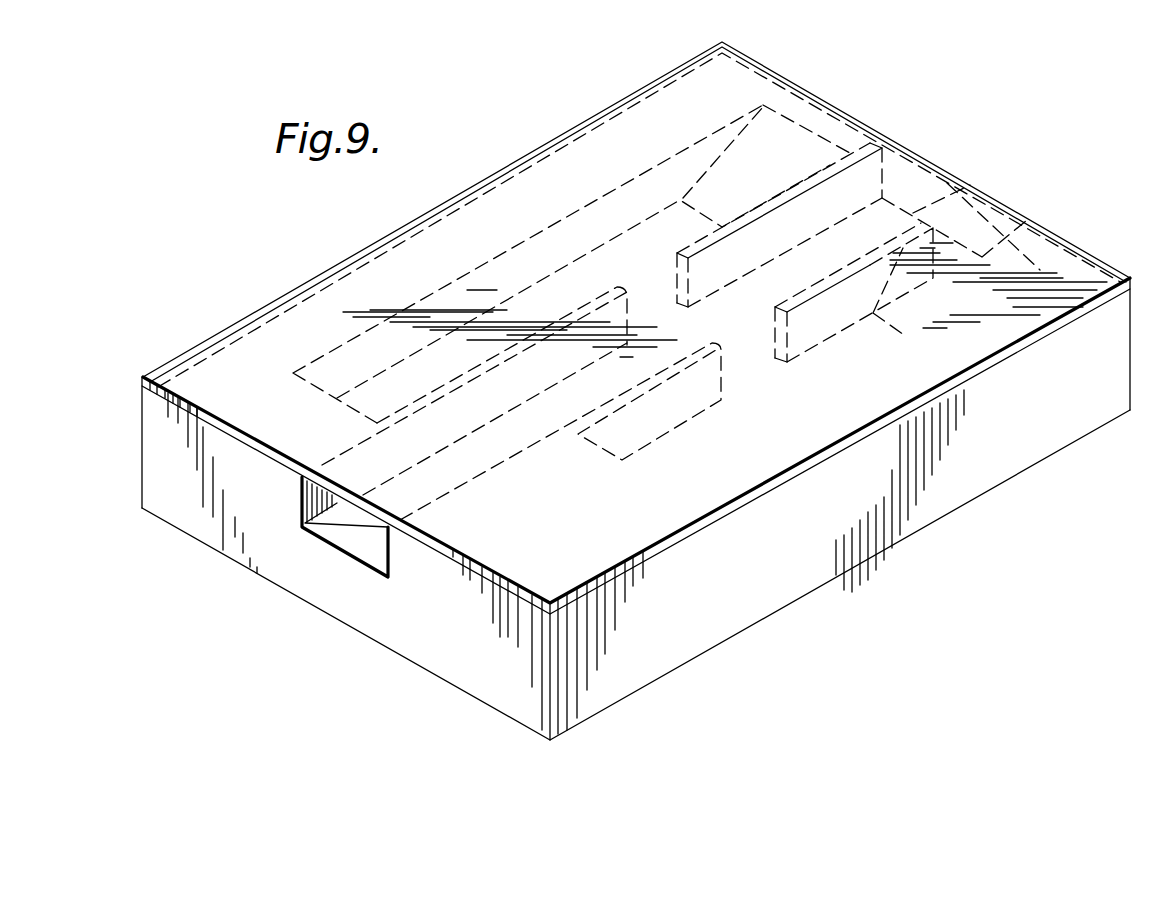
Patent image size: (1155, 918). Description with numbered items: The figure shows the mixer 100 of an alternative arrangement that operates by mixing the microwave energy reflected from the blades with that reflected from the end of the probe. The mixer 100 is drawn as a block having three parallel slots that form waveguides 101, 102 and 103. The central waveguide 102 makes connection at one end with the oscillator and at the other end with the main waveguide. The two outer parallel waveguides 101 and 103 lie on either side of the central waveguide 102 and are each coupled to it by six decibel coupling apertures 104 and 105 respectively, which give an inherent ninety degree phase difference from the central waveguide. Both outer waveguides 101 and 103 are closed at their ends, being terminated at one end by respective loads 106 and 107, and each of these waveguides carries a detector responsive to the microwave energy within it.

The mixer 100 is at (970, 172).
The waveguide 101 is at (462, 348).
The central waveguide 102 is at (497, 476).
The waveguide 103 is at (692, 452).
The coupling aperture 104 is at (647, 307).
The coupling aperture 105 is at (748, 358).
The load 106 is at (806, 162).
The load 107 is at (1027, 219).